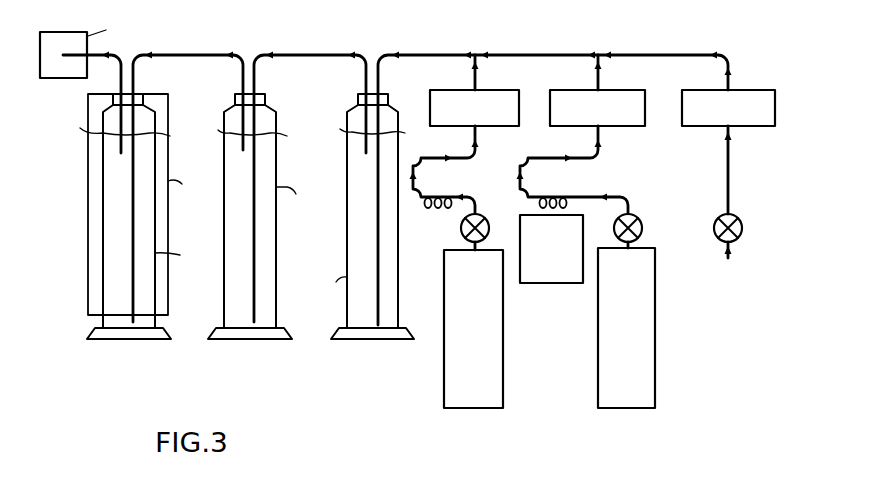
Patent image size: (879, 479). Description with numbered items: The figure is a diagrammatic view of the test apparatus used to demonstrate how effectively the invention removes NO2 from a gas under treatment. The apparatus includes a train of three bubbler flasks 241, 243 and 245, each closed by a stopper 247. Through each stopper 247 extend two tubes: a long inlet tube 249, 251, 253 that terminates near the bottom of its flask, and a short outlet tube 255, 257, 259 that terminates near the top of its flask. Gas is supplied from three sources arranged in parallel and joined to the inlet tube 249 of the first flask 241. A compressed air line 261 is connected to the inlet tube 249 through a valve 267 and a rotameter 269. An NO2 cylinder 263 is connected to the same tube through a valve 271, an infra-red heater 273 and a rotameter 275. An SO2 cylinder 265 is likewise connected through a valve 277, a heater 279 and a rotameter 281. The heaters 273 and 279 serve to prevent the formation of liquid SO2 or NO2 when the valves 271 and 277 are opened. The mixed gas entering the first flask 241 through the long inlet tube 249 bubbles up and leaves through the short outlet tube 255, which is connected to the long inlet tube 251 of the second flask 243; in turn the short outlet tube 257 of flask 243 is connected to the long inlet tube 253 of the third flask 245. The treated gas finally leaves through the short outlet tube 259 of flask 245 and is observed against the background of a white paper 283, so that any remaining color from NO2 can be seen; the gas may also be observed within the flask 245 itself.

The white paper 283 is at (50, 32).
The stopper 247 is at (137, 96).
The short outlet tube 259 is at (135, 168).
The long inlet tube 253 is at (170, 136).
The short outlet tube 257 is at (239, 125).
The long inlet tube 251 is at (287, 136).
The short outlet tube 255 is at (358, 125).
The long inlet tube 249 is at (417, 143).
The bubbler flask 245 is at (143, 368).
The bubbler flask 243 is at (266, 368).
The bubbler flask 241 is at (391, 368).
The rotameter 281 is at (516, 90).
The rotameter 275 is at (612, 90).
The rotameter 269 is at (743, 90).
The heater 279 is at (463, 190).
The infra-red heater 273 is at (570, 190).
The valve 277 is at (461, 229).
The valve 271 is at (638, 219).
The valve 267 is at (738, 218).
The compressed air line 261 is at (734, 251).
The SO2 cylinder 265 is at (505, 384).
The NO2 cylinder 263 is at (657, 384).